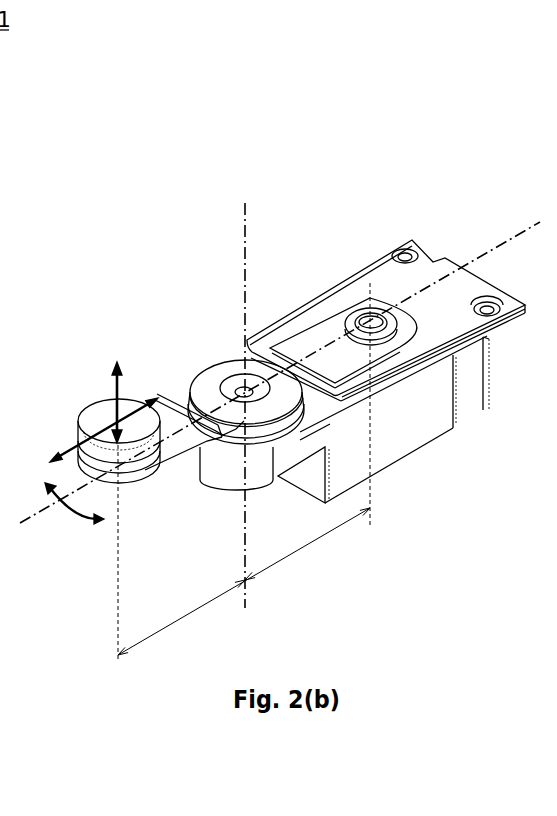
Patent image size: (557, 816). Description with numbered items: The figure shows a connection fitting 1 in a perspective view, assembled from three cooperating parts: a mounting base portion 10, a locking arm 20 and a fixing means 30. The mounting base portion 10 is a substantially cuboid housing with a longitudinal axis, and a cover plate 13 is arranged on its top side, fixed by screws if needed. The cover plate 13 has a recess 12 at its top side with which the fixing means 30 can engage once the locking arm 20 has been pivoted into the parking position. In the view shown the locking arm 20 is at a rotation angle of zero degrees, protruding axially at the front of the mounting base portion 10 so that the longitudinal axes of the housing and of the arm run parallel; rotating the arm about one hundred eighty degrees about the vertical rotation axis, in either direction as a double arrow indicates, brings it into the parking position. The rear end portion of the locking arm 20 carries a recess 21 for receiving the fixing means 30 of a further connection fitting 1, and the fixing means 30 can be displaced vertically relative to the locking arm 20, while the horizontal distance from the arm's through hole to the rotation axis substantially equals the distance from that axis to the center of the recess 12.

The connection fitting 1 is at (231, 117).
The mounting base portion 10 is at (425, 408).
The recess 12 is at (363, 312).
The cover plate 13 is at (417, 272).
The locking arm 20 is at (177, 397).
The recess 21 is at (240, 387).
The fixing means 30 is at (87, 418).